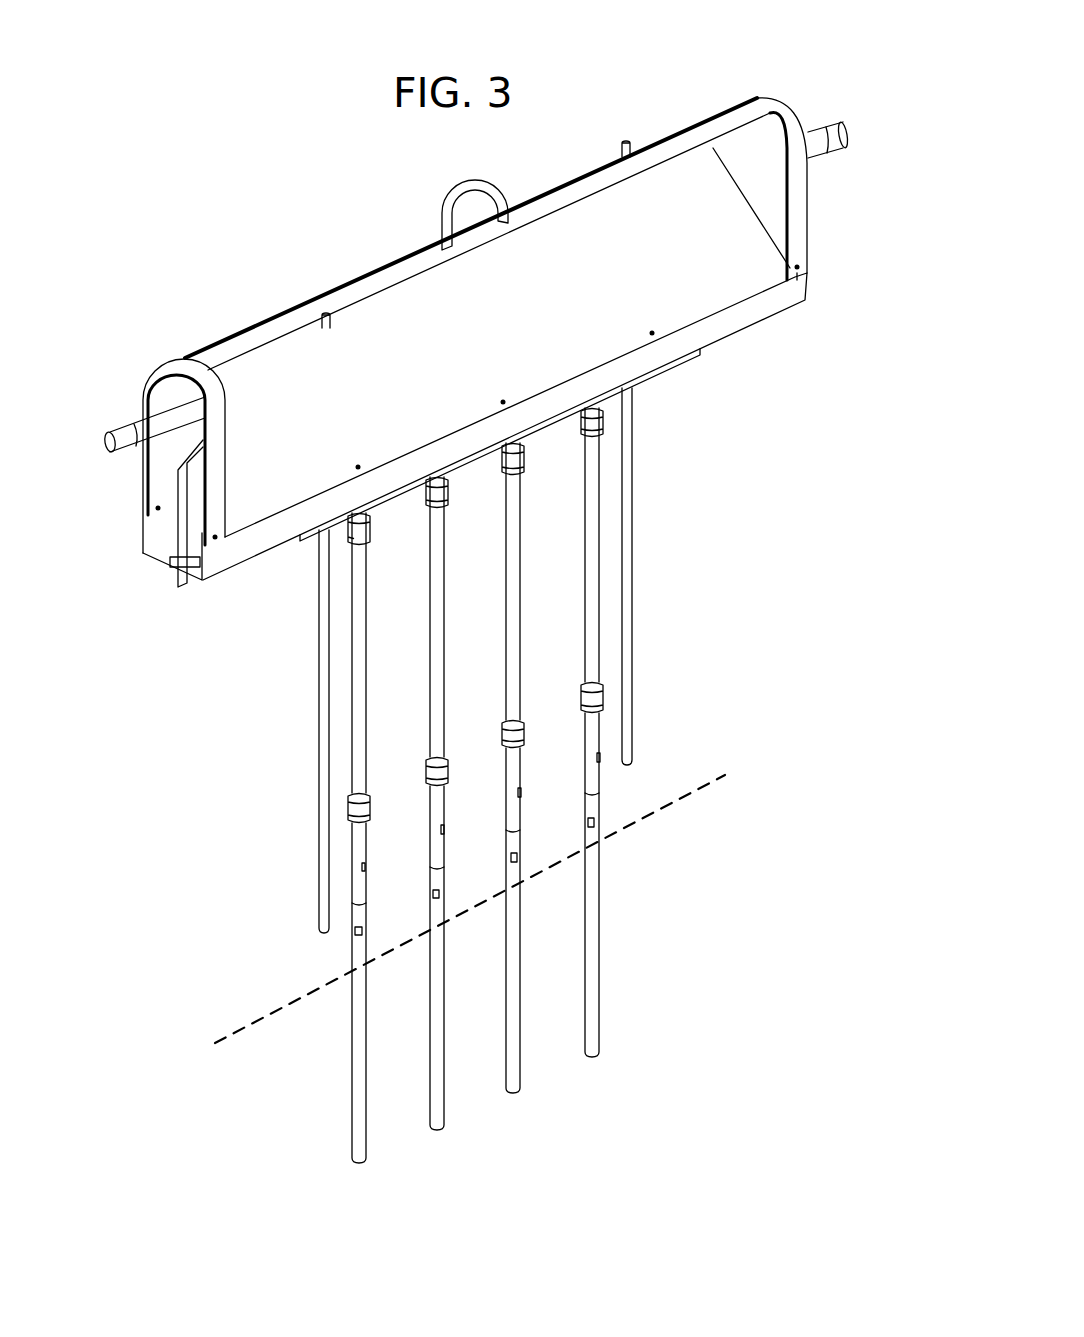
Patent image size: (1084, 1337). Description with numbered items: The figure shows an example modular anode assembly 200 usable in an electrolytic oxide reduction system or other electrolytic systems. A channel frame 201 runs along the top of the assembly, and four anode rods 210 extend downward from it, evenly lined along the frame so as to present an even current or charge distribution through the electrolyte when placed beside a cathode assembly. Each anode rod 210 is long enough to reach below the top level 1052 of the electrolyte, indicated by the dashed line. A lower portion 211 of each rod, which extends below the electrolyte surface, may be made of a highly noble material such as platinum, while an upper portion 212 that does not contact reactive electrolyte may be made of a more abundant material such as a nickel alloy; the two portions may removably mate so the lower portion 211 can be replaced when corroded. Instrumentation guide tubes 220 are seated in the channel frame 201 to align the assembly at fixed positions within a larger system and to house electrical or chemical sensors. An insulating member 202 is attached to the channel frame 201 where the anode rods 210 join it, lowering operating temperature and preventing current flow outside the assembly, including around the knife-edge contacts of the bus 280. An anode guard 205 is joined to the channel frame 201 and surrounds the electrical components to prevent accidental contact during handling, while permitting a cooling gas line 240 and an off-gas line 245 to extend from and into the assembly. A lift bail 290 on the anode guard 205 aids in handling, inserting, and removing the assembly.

The modular anode assembly 200 is at (191, 252).
The channel frame 201 is at (282, 532).
The insulating member 202 is at (660, 375).
The anode guard 205 is at (797, 280).
The anode rods 210 is at (517, 785).
The lower portion 211 is at (348, 915).
The upper portion 212 is at (374, 540).
The instrumentation guide tubes 220 is at (323, 793).
The cooling gas line 240 is at (148, 422).
The off-gas line 245 is at (820, 145).
The bus 280 is at (183, 587).
The lift bail 290 is at (472, 183).
The top level of the electrolyte 1052 is at (680, 802).